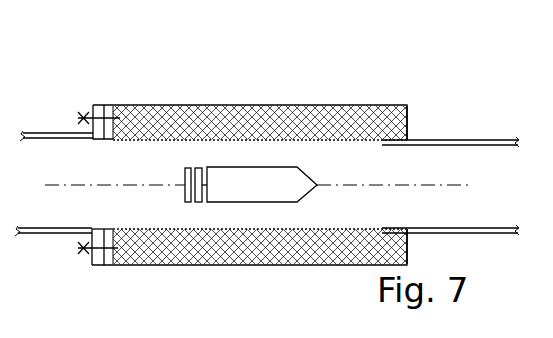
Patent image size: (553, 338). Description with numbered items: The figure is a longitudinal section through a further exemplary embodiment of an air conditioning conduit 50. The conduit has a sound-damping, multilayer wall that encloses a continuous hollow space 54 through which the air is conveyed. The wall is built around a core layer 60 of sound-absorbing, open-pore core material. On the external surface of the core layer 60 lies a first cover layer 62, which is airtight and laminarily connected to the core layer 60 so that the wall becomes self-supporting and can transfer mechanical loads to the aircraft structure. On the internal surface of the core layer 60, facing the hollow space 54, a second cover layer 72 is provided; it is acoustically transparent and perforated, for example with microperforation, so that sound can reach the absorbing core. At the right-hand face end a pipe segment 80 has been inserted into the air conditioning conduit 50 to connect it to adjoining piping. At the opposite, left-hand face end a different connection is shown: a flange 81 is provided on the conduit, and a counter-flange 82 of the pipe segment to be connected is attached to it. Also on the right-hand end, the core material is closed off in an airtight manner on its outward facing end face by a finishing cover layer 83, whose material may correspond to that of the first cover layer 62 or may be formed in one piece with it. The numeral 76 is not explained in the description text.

The air conditioning conduit 50 is at (155, 70).
The continuous hollow space 54 is at (132, 176).
The core layer 60 is at (317, 104).
The first cover layer 62 is at (225, 103).
The second cover layer 72 is at (322, 141).
The reference element 76 is at (476, 332).
The pipe segment 80 is at (495, 137).
The flange 81 is at (108, 103).
The counter-flange 82 is at (95, 131).
The finishing cover layer 83 is at (407, 122).